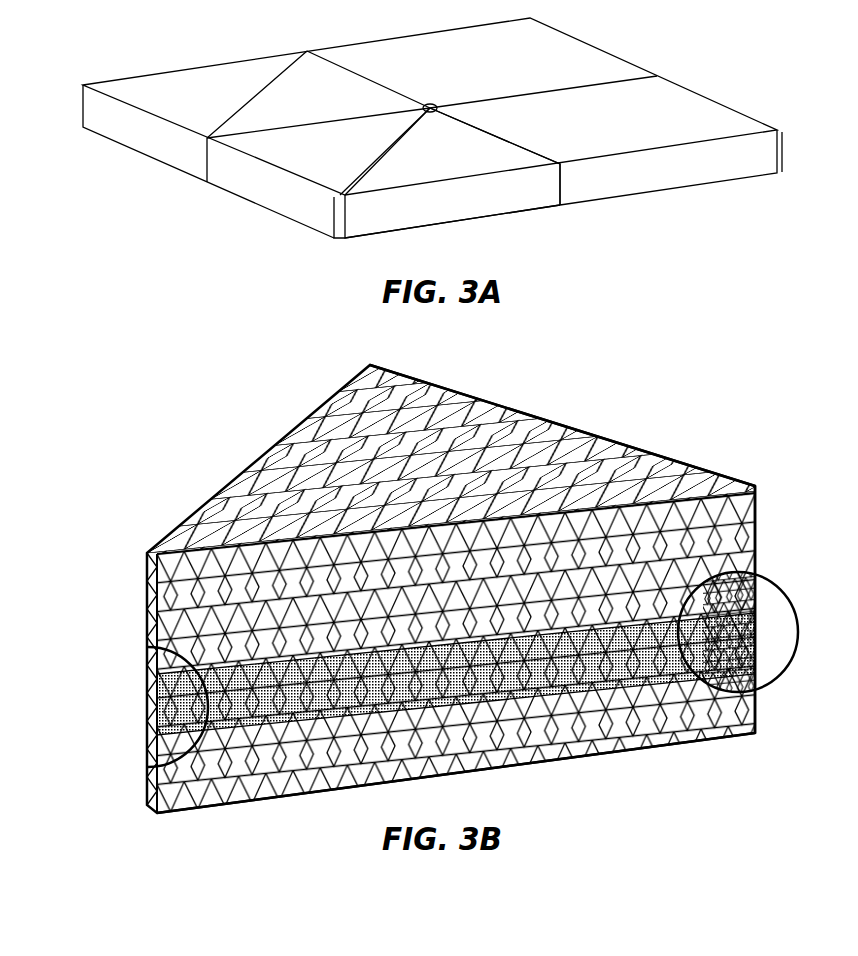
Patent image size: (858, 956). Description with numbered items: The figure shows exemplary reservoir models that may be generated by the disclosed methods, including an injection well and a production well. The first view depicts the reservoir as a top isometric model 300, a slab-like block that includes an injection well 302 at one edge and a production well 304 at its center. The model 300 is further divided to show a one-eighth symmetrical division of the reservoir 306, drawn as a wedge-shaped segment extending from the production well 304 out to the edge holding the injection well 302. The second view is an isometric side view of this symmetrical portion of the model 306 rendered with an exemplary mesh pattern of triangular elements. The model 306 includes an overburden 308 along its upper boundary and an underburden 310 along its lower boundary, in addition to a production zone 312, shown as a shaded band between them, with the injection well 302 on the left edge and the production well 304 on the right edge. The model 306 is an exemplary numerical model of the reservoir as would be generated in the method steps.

In FIG. 3A, the top isometric model 300 is at (142, 17).
In FIG. 3A, the injection well 302 is at (336, 220).
In FIG. 3B, the injection well 302 is at (147, 590).
In FIG. 3A, the production well 304 is at (432, 106).
In FIG. 3B, the production well 304 is at (748, 510).
In FIG. 3A, the symmetrical division of the reservoir 306 is at (450, 163).
In FIG. 3B, the symmetrical division of the reservoir 306 is at (450, 589).
In FIG. 3B, the overburden 308 is at (578, 435).
In FIG. 3B, the underburden 310 is at (666, 738).
In FIG. 3B, the production zone 312 is at (181, 712).